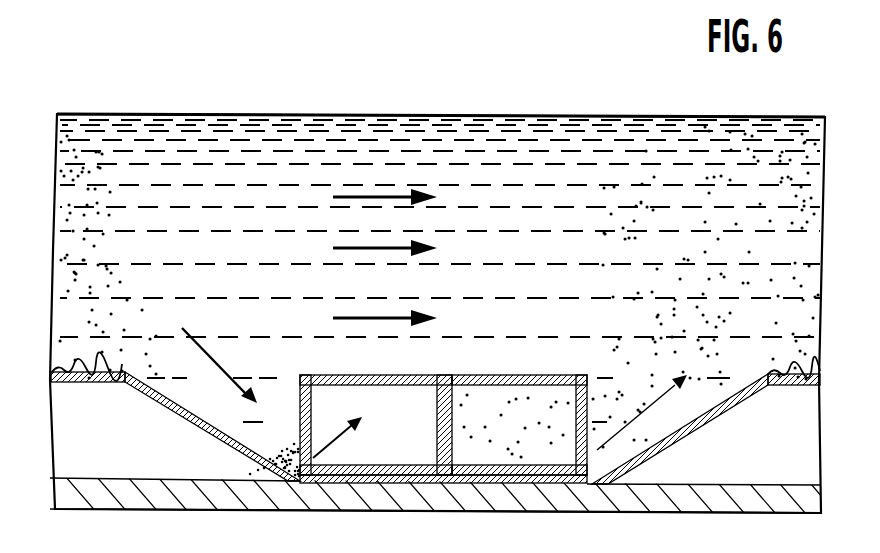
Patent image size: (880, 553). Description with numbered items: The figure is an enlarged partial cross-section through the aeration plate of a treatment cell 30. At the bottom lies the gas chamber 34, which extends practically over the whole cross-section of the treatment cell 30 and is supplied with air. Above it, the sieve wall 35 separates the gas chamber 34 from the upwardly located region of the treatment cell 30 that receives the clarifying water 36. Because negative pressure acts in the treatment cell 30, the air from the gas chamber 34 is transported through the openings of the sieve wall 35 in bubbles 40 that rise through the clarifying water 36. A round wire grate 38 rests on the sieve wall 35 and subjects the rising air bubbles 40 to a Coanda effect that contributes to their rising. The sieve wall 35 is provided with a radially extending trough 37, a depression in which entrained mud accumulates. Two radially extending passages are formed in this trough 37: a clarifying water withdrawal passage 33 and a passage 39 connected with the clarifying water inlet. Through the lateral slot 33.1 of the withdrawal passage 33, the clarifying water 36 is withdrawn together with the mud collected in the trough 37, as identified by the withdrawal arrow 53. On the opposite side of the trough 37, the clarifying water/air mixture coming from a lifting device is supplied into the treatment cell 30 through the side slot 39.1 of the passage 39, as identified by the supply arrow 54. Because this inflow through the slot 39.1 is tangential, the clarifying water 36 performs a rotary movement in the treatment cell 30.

The treatment cell 30 is at (187, 95).
The clarifying water 36 is at (303, 137).
The air bubbles 40 is at (121, 290).
The round wire grate 38 is at (127, 368).
The sieve wall 35 is at (80, 382).
The trough 37 is at (273, 387).
The supply arrow 54 is at (648, 413).
The withdrawal arrow 53 is at (207, 350).
The clarifying water withdrawal passage 33 is at (393, 397).
The lateral slot 33.1 is at (312, 483).
The passage 39 is at (488, 398).
The side slot 39.1 is at (573, 483).
The gas chamber 34 is at (173, 463).